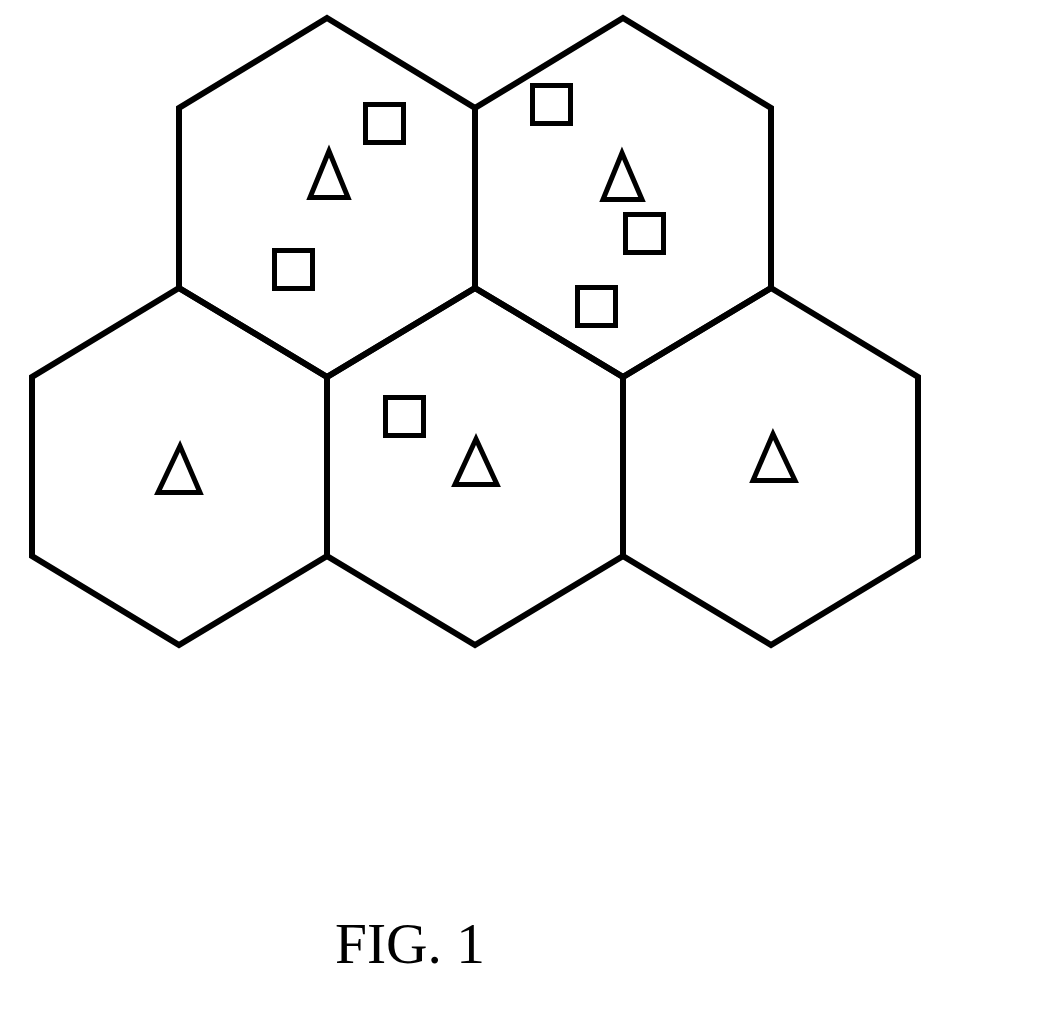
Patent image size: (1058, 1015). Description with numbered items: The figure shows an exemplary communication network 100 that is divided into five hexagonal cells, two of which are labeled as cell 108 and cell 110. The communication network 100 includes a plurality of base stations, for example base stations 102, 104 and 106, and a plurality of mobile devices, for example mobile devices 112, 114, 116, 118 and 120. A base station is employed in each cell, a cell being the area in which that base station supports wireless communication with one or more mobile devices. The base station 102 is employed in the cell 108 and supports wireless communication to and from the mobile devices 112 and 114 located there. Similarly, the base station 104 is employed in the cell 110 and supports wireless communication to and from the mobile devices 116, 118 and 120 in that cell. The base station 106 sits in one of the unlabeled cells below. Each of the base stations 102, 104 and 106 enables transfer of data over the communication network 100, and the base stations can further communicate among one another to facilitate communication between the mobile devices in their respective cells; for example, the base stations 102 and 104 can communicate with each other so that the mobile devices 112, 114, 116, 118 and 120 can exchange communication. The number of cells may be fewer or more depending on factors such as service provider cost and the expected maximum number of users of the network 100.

The communication network 100 is at (921, 848).
The base station 102 is at (313, 172).
The base station 104 is at (642, 180).
The base station 106 is at (488, 460).
The cell 108 is at (180, 158).
The cell 110 is at (643, 32).
The mobile device 112 is at (315, 273).
The mobile device 114 is at (363, 125).
The mobile device 116 is at (618, 312).
The mobile device 118 is at (623, 233).
The mobile device 120 is at (572, 110).